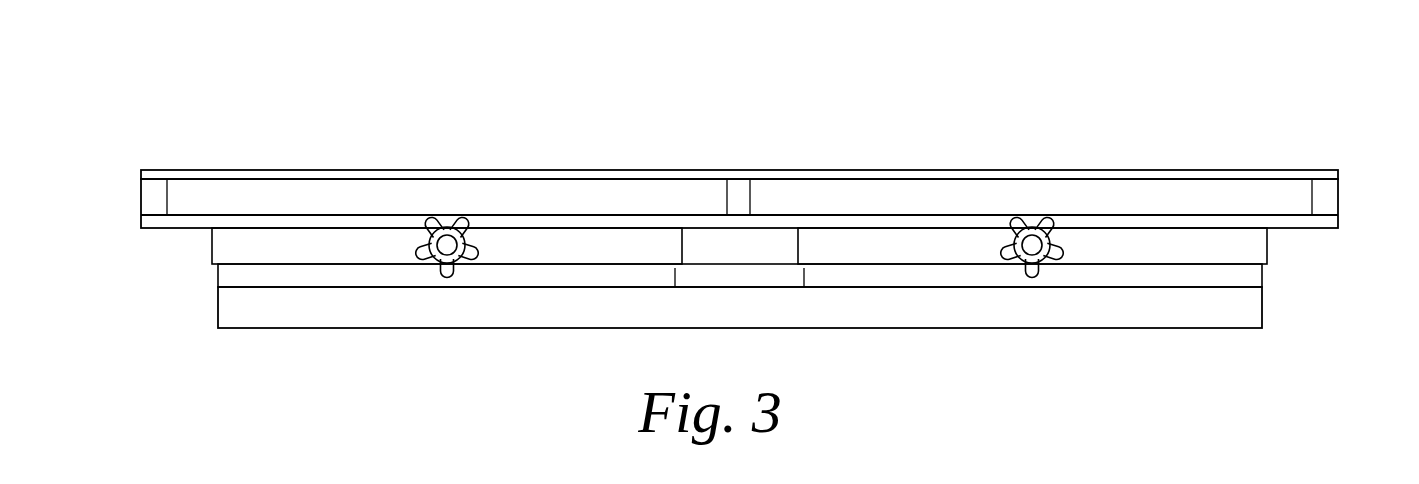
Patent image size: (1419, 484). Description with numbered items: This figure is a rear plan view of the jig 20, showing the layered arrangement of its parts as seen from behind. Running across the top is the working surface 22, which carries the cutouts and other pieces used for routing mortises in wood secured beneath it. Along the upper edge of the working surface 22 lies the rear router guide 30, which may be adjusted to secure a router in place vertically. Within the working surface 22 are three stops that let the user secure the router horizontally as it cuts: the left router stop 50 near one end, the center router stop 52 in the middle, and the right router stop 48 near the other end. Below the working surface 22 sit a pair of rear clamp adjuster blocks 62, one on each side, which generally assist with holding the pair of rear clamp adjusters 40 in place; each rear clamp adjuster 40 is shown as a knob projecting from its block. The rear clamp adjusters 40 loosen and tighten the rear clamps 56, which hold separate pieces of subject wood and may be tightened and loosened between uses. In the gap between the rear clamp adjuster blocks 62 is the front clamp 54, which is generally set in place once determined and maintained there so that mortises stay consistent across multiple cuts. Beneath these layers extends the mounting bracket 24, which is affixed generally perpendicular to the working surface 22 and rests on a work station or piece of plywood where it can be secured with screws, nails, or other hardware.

The jig 20 is at (663, 147).
The working surface 22 is at (873, 213).
The mounting bracket 24 is at (788, 312).
The rear router guide 30 is at (1327, 170).
The rear clamp adjuster 40 is at (438, 268).
The right router stop 48 is at (1310, 195).
The left router stop 50 is at (167, 195).
The center router stop 52 is at (747, 197).
The front clamp 54 is at (747, 268).
The rear clamp 56 is at (232, 278).
The rear clamp adjuster block 62 is at (220, 243).